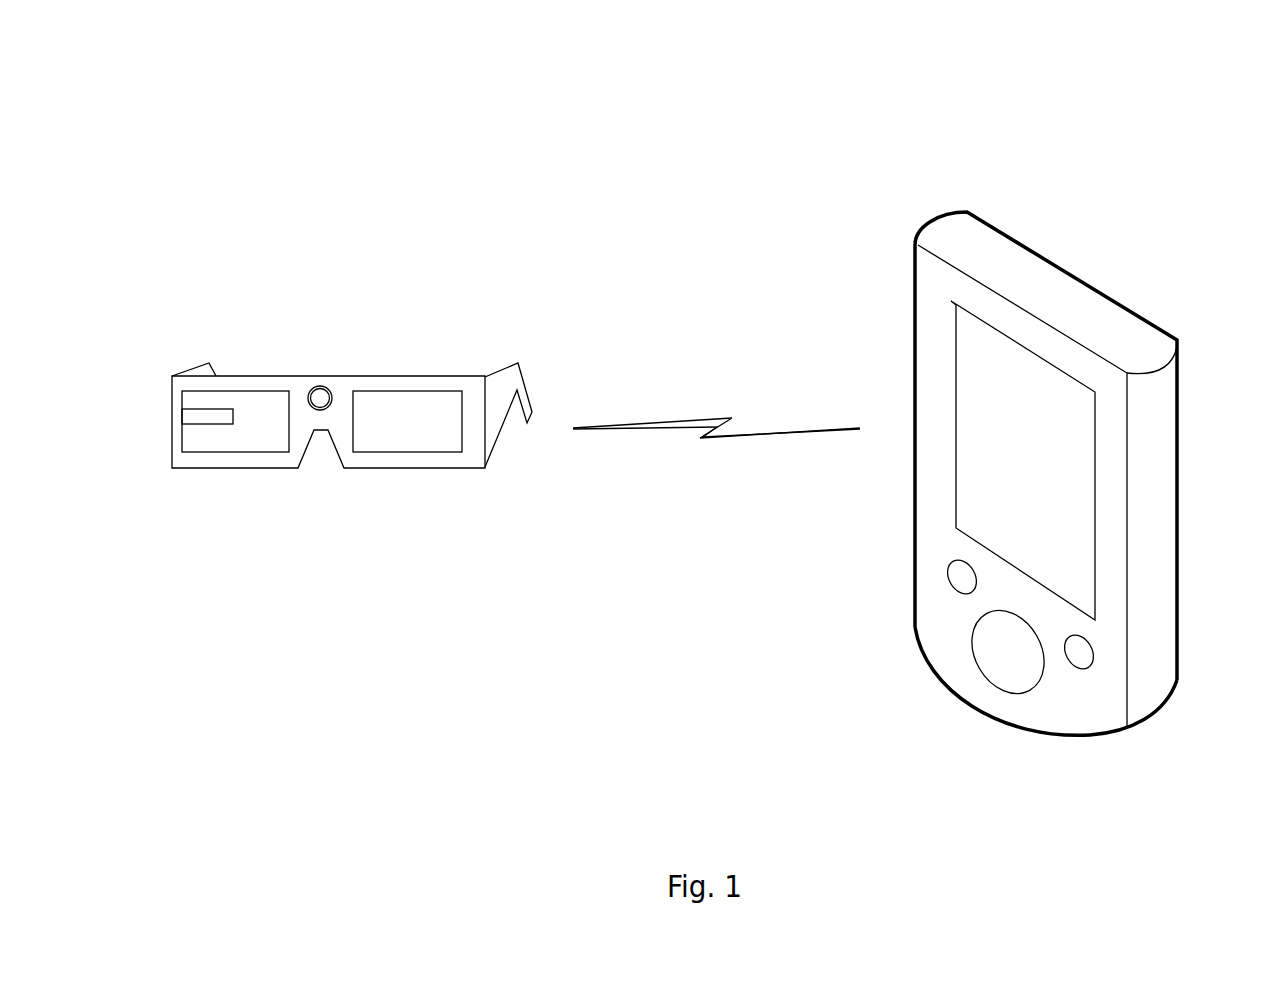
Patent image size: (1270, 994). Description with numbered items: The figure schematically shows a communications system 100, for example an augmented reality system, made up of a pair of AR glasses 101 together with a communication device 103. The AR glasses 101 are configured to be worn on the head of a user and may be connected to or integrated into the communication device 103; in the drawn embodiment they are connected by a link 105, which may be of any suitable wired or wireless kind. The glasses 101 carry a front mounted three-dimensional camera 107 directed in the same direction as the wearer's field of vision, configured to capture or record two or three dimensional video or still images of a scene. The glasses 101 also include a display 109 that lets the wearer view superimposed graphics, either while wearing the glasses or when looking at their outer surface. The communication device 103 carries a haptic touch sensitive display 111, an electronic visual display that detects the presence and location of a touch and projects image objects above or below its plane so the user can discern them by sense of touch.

The communications system 100 is at (596, 135).
The AR glasses 101 is at (257, 371).
The communication device 103 is at (1113, 322).
The wired or wireless link 105 is at (655, 428).
The 3D camera 107 is at (330, 391).
The display 109 is at (205, 417).
The haptic touch sensitive display 111 is at (1072, 442).